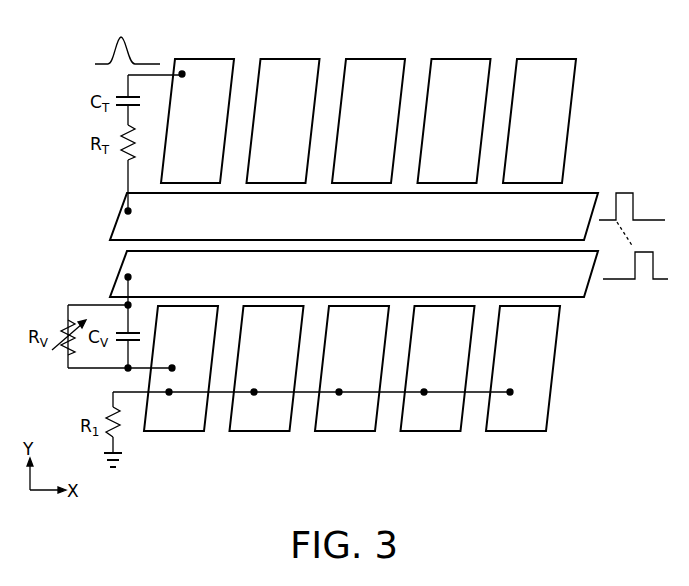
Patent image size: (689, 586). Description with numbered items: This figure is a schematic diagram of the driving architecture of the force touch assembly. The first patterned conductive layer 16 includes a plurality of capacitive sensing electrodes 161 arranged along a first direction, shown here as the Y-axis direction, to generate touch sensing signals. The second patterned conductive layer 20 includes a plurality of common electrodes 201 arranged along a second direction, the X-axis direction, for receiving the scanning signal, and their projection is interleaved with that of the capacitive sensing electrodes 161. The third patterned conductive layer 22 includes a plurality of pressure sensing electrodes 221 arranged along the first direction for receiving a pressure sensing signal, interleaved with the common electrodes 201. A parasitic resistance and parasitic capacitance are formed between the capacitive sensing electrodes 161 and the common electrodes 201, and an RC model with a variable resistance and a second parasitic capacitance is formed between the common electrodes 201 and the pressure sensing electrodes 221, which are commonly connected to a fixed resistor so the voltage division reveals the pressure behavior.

The first patterned conductive layer 16 is at (411, 100).
The capacitive sensing electrodes 161 is at (193, 58).
The second patterned conductive layer 20 is at (352, 230).
The common electrodes 201 is at (118, 222).
The third patterned conductive layer 22 is at (378, 392).
The pressure sensing electrodes 221 is at (174, 437).